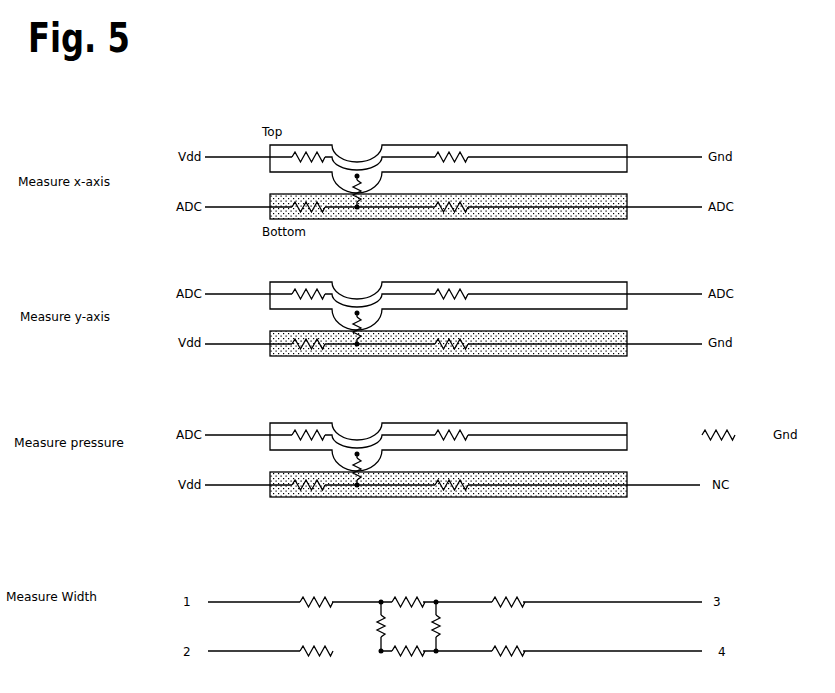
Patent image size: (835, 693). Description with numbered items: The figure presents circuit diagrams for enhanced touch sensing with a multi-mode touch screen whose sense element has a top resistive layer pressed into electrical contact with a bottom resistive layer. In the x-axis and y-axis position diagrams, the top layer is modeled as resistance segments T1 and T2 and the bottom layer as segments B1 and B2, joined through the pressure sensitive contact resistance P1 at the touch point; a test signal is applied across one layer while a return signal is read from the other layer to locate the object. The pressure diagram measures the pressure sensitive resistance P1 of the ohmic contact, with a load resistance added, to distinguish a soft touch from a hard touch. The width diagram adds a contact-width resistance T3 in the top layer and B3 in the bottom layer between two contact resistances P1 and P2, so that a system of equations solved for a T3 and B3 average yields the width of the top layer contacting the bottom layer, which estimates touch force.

The top resistive layer resistance segment T1 is at (312, 369).
The top resistive layer resistance segment T2 is at (480, 369).
The top layer contact-width resistance T3 is at (408, 593).
The bottom resistive layer resistance segment B1 is at (312, 417).
The bottom resistive layer resistance segment B2 is at (480, 417).
The bottom layer contact-width resistance B3 is at (408, 642).
The pressure sensitive contact resistance P1 is at (375, 414).
The pressure sensitive contact resistance P2 is at (449, 627).